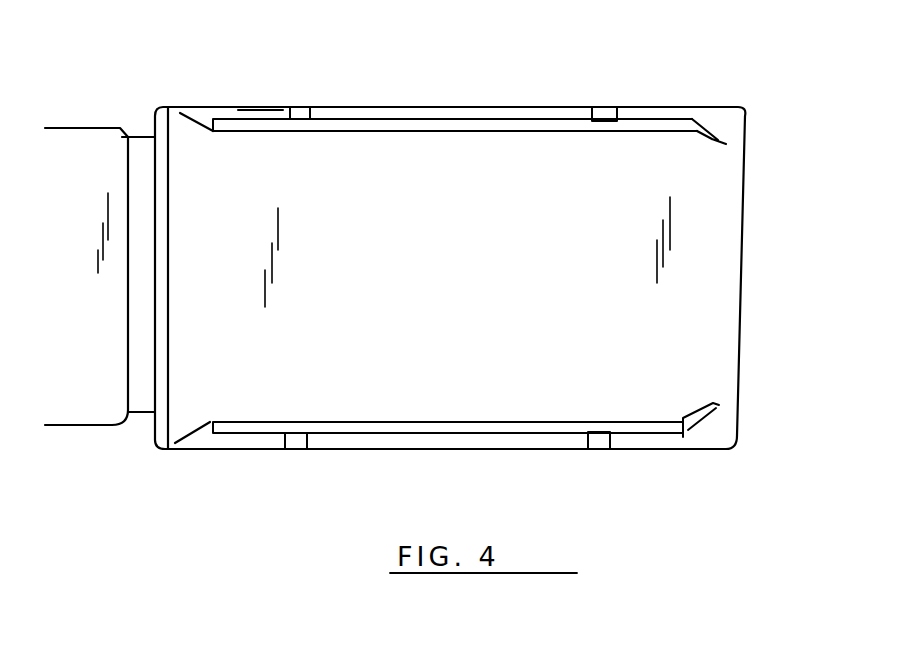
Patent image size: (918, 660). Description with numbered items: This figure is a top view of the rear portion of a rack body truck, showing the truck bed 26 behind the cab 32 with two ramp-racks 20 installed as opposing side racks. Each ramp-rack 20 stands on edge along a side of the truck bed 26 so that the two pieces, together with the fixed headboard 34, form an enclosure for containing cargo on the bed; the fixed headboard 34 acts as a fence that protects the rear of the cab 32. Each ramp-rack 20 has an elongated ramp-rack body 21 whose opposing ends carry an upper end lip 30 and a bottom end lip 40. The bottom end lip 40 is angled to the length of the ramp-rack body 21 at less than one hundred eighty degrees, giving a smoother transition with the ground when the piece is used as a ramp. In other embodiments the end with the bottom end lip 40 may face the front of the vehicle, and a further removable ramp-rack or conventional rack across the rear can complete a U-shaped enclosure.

The ramp-rack 20 is at (510, 122).
The ramp-rack body 21 is at (392, 124).
The truck bed 26 is at (709, 331).
The upper end lip 30 is at (193, 125).
The cab 32 is at (88, 122).
The fixed headboard 34 is at (164, 297).
The bottom end lip 40 is at (713, 137).